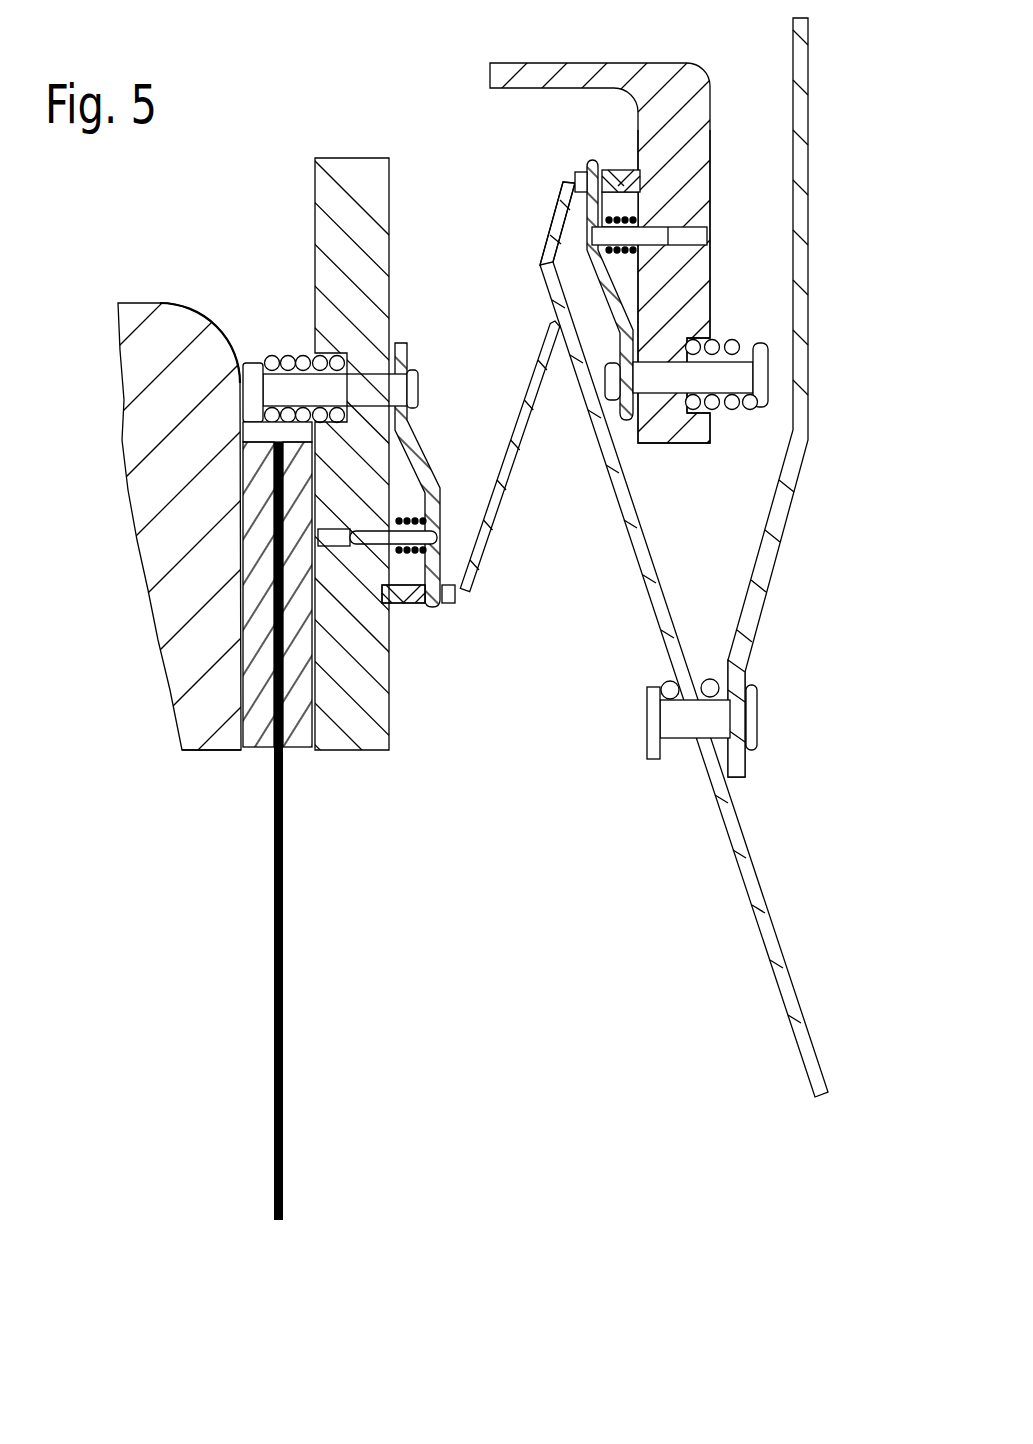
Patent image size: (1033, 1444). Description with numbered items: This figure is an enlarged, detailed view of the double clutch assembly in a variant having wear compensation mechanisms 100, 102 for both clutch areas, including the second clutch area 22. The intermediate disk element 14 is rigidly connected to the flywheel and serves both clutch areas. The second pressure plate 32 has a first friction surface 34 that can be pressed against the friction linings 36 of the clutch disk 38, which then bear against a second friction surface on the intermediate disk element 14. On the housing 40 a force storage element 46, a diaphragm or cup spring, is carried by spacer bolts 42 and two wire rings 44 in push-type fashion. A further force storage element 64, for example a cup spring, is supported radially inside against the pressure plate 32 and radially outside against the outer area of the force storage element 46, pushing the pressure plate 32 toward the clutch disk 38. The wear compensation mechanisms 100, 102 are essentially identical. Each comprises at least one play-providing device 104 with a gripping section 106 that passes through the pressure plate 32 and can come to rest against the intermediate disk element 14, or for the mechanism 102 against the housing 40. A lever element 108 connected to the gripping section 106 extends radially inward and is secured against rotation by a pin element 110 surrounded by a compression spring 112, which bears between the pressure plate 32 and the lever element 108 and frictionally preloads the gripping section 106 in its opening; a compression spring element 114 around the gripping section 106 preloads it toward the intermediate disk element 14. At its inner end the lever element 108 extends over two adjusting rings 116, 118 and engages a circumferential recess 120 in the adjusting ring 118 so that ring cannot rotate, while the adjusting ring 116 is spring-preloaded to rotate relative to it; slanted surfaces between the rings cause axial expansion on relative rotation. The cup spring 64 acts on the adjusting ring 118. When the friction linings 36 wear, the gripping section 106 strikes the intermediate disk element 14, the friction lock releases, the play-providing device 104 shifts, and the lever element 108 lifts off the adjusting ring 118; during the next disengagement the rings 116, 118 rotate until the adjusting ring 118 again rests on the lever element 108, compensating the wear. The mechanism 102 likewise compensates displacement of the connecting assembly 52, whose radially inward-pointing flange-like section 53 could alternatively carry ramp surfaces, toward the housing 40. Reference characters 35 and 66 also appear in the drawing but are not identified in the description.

The intermediate disk element 14 is at (183, 658).
The second clutch area 22 is at (281, 683).
The second pressure plate 32 is at (372, 706).
The first friction surface 34 is at (317, 594).
The lower edge of guide body 35 is at (183, 748).
The friction linings 36 is at (303, 736).
The clutch disk 38 is at (290, 1046).
The housing 40 is at (810, 226).
The spacer bolts 42 is at (712, 721).
The wire rings 44 is at (718, 692).
The force storage element 46 is at (745, 872).
The connecting assembly 52 is at (605, 63).
The flange-like section 53 is at (690, 202).
The force storage element 64 is at (514, 464).
The lever extension 66 is at (556, 218).
The wear compensation mechanism 100 is at (424, 669).
The wear compensation mechanism 102 is at (545, 160).
The play-providing device 104 is at (457, 373).
The gripping section 106 is at (742, 380).
The lever element 108 is at (618, 305).
The pin element 110 is at (340, 541).
The compression spring 112 is at (396, 518).
The compression spring element 114 is at (278, 393).
The adjusting ring 116 is at (646, 173).
The adjusting ring 118 is at (688, 86).
The circumferential recess 120 is at (458, 598).